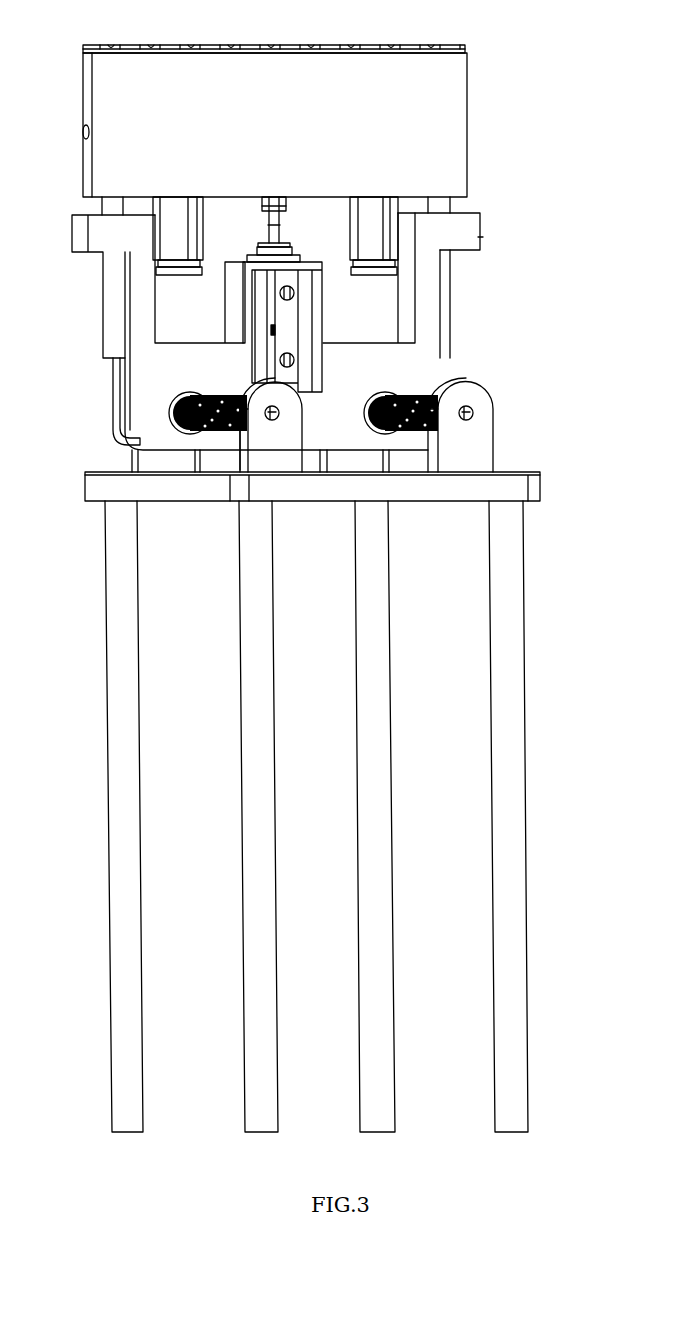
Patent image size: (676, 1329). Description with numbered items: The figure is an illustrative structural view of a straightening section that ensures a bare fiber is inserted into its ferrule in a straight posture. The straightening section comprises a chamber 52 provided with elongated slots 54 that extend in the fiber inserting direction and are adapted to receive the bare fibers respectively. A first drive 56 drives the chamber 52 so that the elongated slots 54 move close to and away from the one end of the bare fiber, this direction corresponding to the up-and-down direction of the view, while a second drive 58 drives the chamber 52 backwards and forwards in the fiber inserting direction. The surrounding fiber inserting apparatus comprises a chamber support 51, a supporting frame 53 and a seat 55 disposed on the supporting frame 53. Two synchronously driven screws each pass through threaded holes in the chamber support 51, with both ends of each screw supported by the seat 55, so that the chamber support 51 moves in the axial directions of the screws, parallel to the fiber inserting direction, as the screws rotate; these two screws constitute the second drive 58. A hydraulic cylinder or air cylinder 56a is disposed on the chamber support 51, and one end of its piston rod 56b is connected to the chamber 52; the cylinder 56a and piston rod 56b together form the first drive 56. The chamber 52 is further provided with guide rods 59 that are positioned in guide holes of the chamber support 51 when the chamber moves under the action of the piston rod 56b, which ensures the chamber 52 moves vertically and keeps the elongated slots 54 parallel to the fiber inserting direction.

The chamber support 51 is at (147, 365).
The chamber 52 is at (438, 102).
The supporting frame 53 is at (510, 487).
The elongated slots 54 is at (449, 45).
The seat 55 is at (480, 448).
The first drive 56 is at (411, 294).
The hydraulic cylinder or air cylinder 56a is at (291, 325).
The piston rod 56b is at (278, 225).
The second drive 58 is at (170, 405).
The guide rods 59 is at (115, 289).